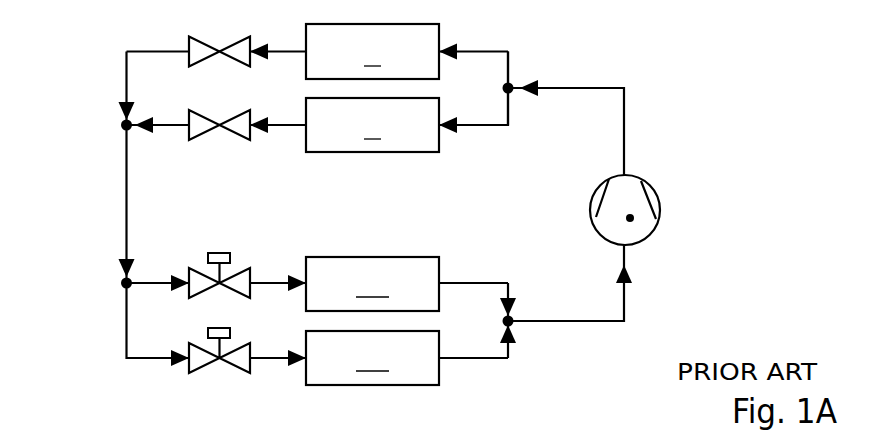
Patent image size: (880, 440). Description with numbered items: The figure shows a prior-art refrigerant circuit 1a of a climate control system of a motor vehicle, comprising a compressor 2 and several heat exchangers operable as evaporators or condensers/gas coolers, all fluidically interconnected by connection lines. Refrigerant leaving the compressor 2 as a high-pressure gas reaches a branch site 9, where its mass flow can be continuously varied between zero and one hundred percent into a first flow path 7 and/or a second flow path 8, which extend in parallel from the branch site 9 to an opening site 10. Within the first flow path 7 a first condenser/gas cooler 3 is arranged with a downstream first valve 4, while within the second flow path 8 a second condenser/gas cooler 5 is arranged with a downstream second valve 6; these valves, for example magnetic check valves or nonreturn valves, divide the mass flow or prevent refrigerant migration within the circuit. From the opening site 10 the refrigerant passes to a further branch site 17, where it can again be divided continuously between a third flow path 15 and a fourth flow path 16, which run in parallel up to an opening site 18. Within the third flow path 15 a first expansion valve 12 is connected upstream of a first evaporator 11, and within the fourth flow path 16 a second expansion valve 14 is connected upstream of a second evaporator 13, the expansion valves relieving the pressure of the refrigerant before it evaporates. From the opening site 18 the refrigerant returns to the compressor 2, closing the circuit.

The refrigerant circuit 1a is at (395, 206).
The compressor 2 is at (632, 220).
The first condenser/gas cooler 3 is at (407, 51).
The first valve 4 is at (197, 47).
The second condenser/gas cooler 5 is at (344, 125).
The second valve 6 is at (198, 128).
The first flow path 7 is at (510, 63).
The second flow path 8 is at (481, 127).
The branch site 9 is at (513, 92).
The opening site 10 is at (121, 126).
The first evaporator 11 is at (372, 284).
The first expansion valve 12 is at (243, 285).
The second evaporator 13 is at (372, 358).
The second expansion valve 14 is at (200, 363).
The third flow path 15 is at (472, 282).
The fourth flow path 16 is at (510, 357).
The branch site 17 is at (121, 283).
The opening site 18 is at (513, 317).